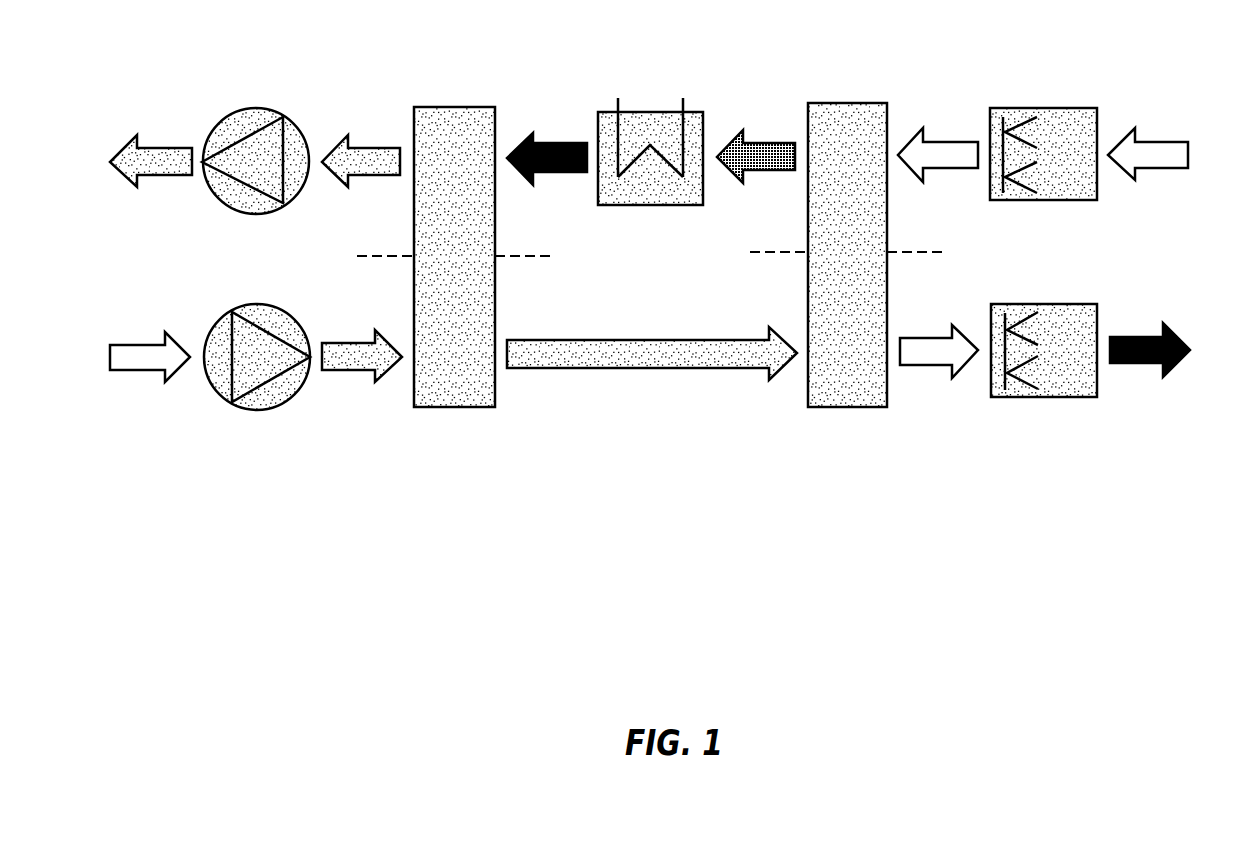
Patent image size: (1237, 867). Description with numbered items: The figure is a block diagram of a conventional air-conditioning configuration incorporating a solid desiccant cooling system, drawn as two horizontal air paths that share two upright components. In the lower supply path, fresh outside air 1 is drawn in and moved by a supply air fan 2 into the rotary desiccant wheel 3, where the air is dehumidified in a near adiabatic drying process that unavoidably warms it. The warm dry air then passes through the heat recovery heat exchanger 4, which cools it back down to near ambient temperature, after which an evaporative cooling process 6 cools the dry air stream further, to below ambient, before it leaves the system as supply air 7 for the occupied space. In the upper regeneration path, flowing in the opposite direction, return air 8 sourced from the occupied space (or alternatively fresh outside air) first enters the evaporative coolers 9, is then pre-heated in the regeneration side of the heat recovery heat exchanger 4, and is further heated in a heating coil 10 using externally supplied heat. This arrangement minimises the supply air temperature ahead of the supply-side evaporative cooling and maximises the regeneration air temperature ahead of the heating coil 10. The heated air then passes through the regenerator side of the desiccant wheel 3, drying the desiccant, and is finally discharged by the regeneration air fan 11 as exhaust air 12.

The fresh (outside) air 1 is at (135, 372).
The feed pump 2 is at (255, 410).
The rotary desiccant wheel 3 is at (452, 107).
The heat recovery heat exchanger 4 is at (843, 103).
The evaporative cooling process 6 is at (1043, 397).
The supply air 7 is at (1133, 364).
The return air 8 is at (1160, 142).
The coolers 9 is at (1040, 108).
The heating coil 10 is at (648, 112).
The regeneration air fan 11 is at (257, 107).
The exhaust air 12 is at (162, 148).